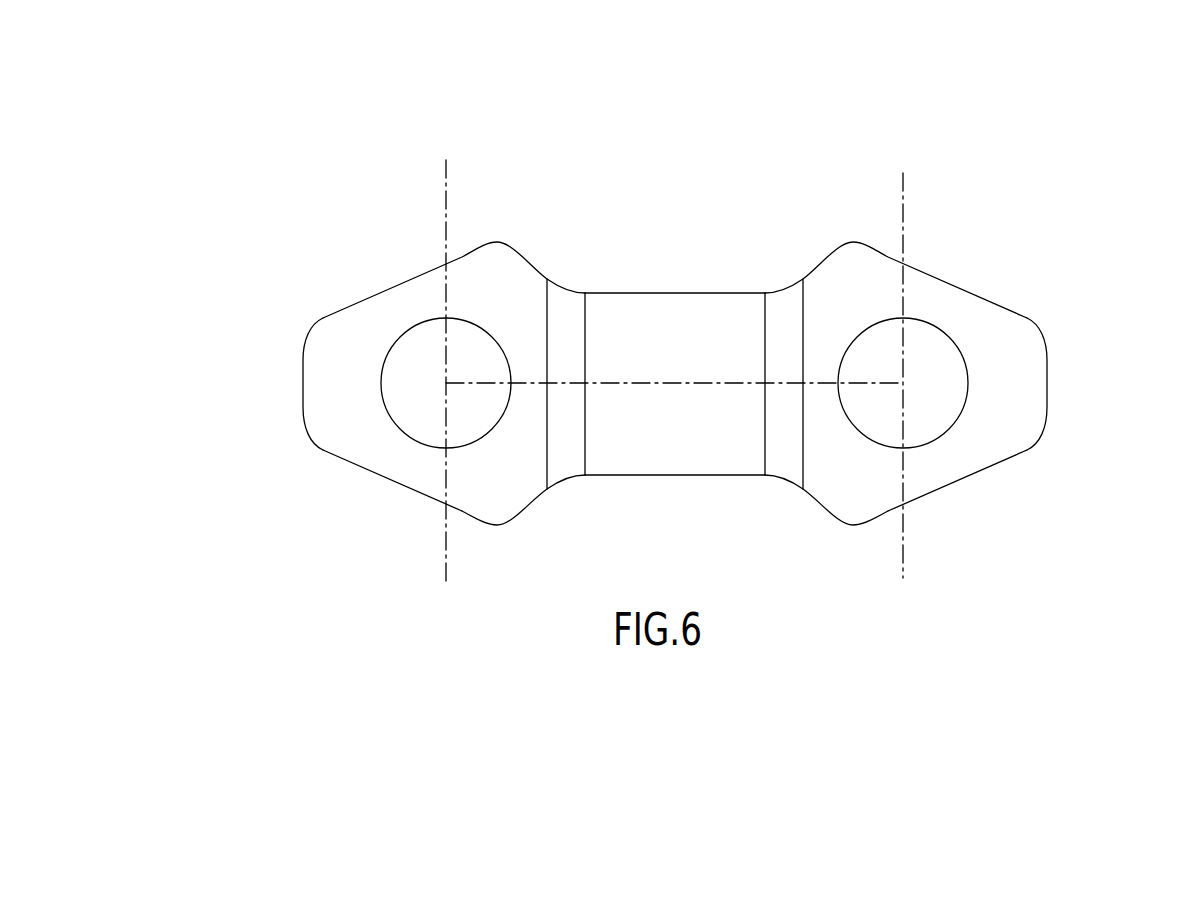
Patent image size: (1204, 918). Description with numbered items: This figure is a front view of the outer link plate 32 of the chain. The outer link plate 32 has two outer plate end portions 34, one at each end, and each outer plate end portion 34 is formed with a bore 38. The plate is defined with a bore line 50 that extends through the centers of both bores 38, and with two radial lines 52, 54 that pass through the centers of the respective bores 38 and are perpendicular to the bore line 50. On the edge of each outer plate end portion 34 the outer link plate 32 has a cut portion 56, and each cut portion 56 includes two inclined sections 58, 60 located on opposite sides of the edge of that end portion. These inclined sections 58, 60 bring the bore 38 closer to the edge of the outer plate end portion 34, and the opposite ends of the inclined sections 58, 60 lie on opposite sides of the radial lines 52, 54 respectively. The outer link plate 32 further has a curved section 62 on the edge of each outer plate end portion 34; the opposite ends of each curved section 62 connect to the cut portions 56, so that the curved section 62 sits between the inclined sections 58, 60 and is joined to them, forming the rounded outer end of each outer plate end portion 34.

The outer link plate 32 is at (1002, 263).
The outer plate end portion 34 is at (410, 465).
The bore 38 is at (400, 375).
The bore line 50 is at (656, 383).
The radial line 52 is at (445, 188).
The radial line 54 is at (902, 205).
The cut portion 56 is at (402, 502).
The inclined section 58 is at (397, 282).
The inclined section 60 is at (358, 468).
The curved section 62 is at (300, 367).